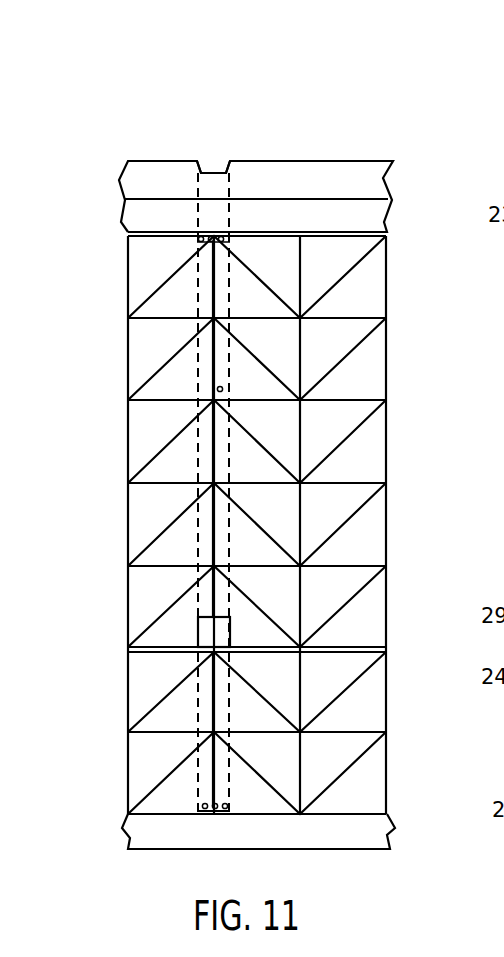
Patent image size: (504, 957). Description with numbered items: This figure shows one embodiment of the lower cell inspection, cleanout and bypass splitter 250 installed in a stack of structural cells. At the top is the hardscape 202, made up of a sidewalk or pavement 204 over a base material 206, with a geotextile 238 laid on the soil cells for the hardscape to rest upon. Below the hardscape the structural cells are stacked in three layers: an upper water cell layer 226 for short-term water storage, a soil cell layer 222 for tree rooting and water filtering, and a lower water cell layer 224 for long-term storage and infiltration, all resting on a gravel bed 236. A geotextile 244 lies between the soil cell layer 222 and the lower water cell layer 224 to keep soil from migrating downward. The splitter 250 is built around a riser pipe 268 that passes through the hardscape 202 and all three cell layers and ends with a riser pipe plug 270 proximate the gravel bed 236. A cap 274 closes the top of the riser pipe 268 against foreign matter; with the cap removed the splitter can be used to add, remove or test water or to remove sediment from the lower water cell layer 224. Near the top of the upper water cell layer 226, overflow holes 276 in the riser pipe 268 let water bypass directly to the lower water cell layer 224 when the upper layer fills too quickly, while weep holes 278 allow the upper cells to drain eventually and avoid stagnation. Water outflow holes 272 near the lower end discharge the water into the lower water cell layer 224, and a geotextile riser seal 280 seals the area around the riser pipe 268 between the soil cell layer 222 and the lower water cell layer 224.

The lower cell inspection, cleanout and bypass splitter 250 is at (245, 437).
The hardscape 202 is at (403, 162).
The sidewalk or pavement 204 is at (369, 188).
The base material 206 is at (357, 225).
The geotextile 238 is at (157, 232).
The upper water cell layer 226 is at (398, 240).
The soil cell layer 222 is at (395, 402).
The lower water cell layer 224 is at (395, 654).
The gravel bed 236 is at (274, 842).
The geotextile 244 is at (173, 652).
The riser pipe 268 is at (238, 172).
The cap 274 is at (210, 164).
The overflow holes 276 is at (220, 242).
The weep holes 278 is at (219, 388).
The geotextile riser seal 280 is at (207, 625).
The water outflow holes 272 is at (204, 804).
The riser pipe plug 270 is at (207, 814).